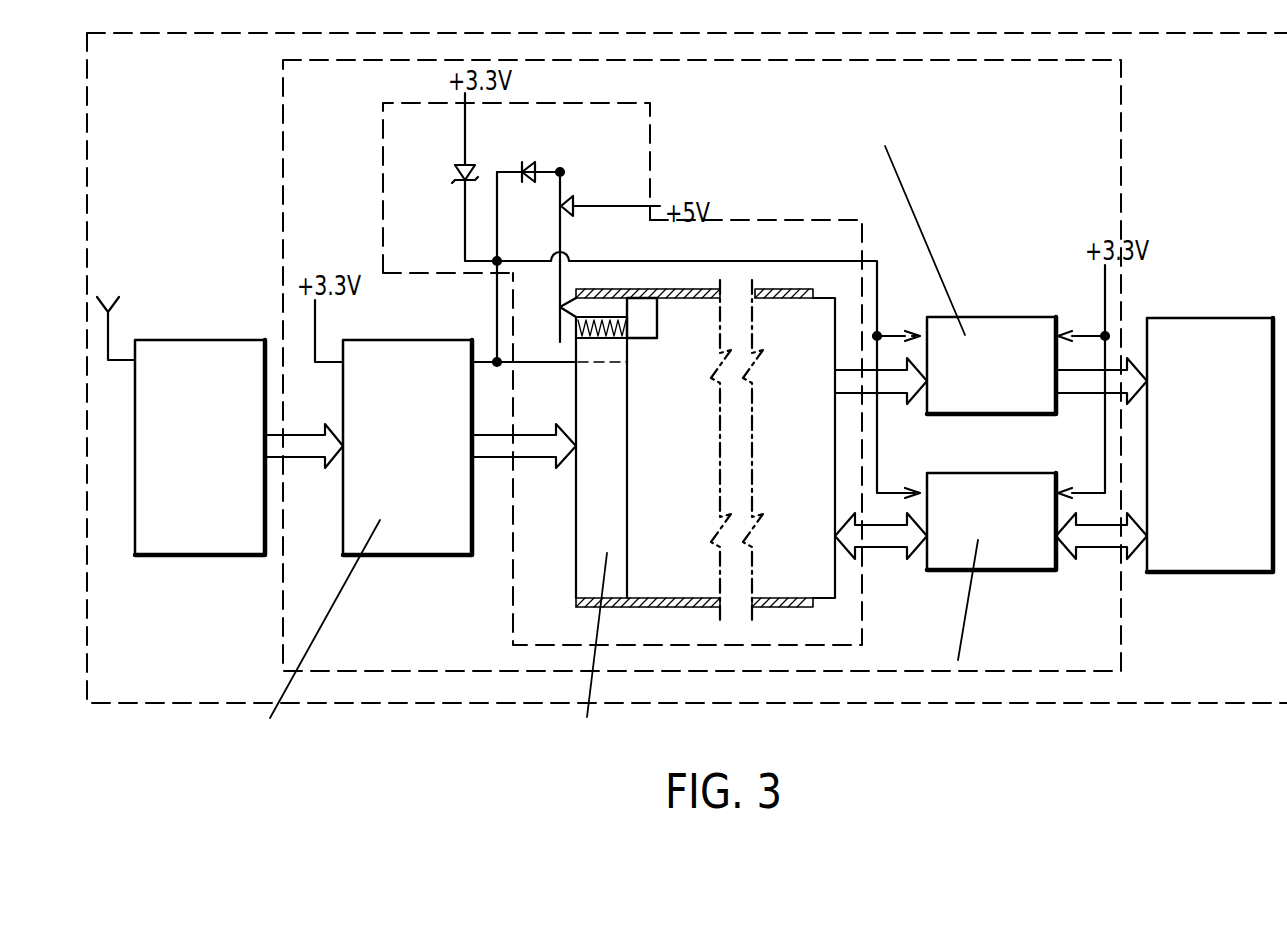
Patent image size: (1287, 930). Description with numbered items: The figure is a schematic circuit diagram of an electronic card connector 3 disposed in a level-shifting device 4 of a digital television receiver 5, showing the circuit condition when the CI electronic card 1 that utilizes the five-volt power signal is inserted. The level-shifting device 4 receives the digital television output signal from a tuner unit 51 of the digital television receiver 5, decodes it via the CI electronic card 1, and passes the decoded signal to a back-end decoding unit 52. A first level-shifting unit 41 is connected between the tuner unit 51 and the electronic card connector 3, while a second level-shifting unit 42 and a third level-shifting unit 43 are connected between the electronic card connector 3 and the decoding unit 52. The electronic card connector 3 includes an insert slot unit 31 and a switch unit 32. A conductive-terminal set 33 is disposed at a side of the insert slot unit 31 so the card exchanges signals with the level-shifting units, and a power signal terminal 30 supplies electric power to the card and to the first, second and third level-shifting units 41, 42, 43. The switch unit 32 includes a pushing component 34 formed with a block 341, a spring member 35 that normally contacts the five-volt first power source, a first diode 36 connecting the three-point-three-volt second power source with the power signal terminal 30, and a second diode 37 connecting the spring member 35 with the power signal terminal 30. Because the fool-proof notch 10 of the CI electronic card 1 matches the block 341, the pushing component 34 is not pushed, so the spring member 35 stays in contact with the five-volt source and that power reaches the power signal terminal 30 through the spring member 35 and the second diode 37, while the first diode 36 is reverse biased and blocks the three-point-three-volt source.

The CI electronic card 1 is at (812, 338).
The electronic card connector 3 is at (788, 216).
The level-shifting device 4 is at (1123, 100).
The digital television receiver 5 is at (1197, 33).
The fool-proof notch 10 is at (645, 339).
The power signal terminal 30 is at (544, 363).
The insert slot unit 31 is at (768, 292).
The switch unit 32 is at (577, 153).
The conductive-terminal set 33 is at (576, 508).
The pushing component 34 is at (609, 290).
The block 341 is at (640, 313).
The spring member 35 is at (566, 185).
The first diode 36 is at (462, 169).
The second diode 37 is at (528, 167).
The first level-shifting unit 41 is at (408, 340).
The second level-shifting unit 42 is at (1020, 317).
The third level-shifting unit 43 is at (1032, 575).
The tuner unit 51 is at (200, 340).
The decoding unit 52 is at (1212, 318).